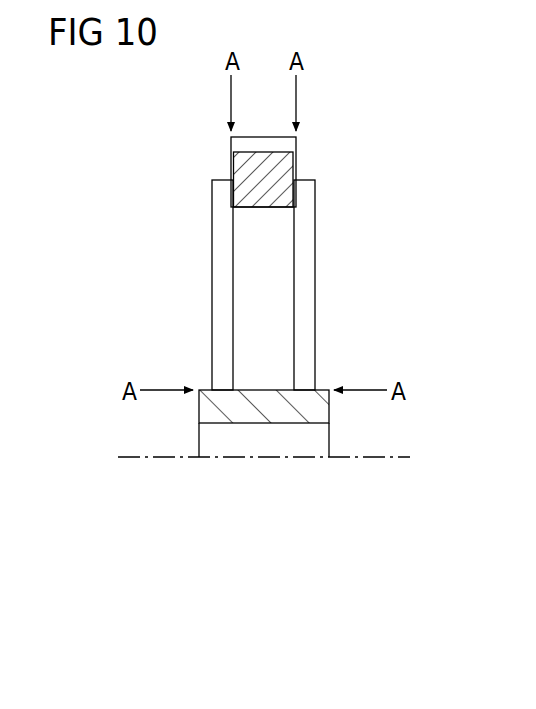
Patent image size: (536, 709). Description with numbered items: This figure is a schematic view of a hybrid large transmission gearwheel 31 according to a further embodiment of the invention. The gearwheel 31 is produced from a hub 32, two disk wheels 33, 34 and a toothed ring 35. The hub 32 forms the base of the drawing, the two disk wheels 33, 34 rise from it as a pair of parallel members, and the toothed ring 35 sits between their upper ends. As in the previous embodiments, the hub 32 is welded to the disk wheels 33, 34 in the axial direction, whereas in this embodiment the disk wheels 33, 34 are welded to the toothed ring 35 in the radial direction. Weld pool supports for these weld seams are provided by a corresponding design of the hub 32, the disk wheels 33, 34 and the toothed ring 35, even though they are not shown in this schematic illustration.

The hybrid large transmission gearwheel 31 is at (324, 149).
The hub 32 is at (313, 403).
The disk wheel 33 is at (307, 282).
The disk wheel 34 is at (223, 282).
The toothed ring 35 is at (245, 177).